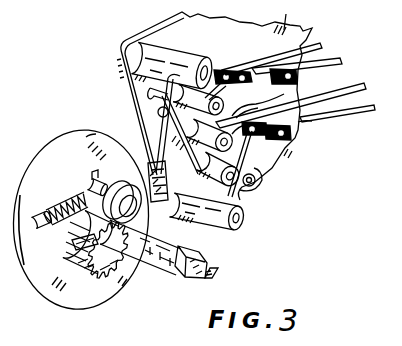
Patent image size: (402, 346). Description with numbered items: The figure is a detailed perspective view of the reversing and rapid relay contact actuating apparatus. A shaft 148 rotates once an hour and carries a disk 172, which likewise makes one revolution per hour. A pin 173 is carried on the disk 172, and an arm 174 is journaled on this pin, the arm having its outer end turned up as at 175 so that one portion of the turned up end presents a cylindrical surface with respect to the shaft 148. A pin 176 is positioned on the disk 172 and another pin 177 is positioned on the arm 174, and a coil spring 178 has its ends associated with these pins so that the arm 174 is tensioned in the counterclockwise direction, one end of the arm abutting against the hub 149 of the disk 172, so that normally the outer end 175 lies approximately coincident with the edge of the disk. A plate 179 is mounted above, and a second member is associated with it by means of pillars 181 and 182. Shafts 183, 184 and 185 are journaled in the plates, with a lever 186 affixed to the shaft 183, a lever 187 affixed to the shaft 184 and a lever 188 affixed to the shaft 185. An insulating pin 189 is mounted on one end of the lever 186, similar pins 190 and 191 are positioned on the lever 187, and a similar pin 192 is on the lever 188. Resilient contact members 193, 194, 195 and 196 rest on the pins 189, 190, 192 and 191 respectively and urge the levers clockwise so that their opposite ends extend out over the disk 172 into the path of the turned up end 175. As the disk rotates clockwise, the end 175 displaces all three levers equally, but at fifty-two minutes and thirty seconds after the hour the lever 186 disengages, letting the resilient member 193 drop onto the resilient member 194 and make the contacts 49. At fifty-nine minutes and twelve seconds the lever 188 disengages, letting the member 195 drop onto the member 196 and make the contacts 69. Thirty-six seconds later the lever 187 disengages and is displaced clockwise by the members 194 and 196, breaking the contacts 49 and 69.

The contacts 49 is at (282, 15).
The contacts 69 is at (312, 121).
The shaft 148 is at (212, 270).
The hub 149 is at (74, 244).
The disk 172 is at (41, 154).
The pin 173 is at (80, 254).
The arm 174 is at (96, 134).
The turned up end 175 is at (166, 176).
The pin 176 is at (44, 210).
The pin 177 is at (113, 180).
The coil spring 178 is at (75, 196).
The plate 179 is at (165, 18).
The pillar 181 is at (183, 38).
The pillar 182 is at (219, 226).
The shaft 183 is at (187, 100).
The shaft 184 is at (217, 136).
The shaft 185 is at (229, 171).
The lever 186 is at (160, 104).
The lever 187 is at (154, 132).
The lever 188 is at (166, 223).
The pin 189 is at (220, 66).
The pin 190 is at (300, 87).
The pin 191 is at (284, 133).
The pin 192 is at (248, 140).
The resilient contact member 193 is at (316, 27).
The resilient contact member 194 is at (331, 56).
The resilient contact member 195 is at (345, 80).
The resilient contact member 196 is at (358, 106).